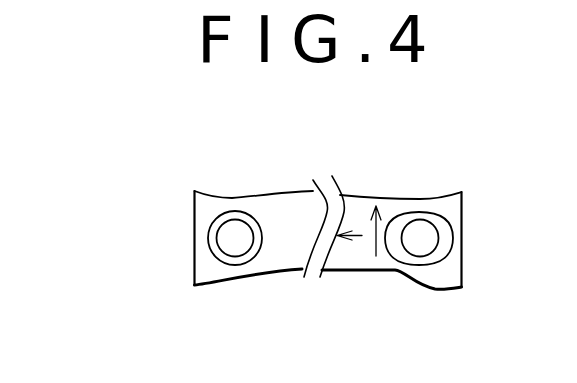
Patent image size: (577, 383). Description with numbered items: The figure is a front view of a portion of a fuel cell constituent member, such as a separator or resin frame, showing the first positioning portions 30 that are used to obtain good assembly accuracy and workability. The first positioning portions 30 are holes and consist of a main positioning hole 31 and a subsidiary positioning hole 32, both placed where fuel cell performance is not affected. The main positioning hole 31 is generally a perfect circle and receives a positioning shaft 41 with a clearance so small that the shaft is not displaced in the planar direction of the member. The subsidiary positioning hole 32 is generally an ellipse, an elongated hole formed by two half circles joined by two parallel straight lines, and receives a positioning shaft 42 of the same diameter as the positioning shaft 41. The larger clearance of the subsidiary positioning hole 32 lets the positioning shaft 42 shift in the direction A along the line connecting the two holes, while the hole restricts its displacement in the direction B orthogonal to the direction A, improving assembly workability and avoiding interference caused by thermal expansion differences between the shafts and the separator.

The first positioning portions 30 is at (323, 260).
The main positioning hole 31 is at (228, 258).
The subsidiary positioning hole 32 is at (333, 268).
The positioning shaft 41 is at (223, 239).
The positioning shaft 42 is at (430, 238).
The direction A is at (362, 235).
The direction B is at (325, 272).